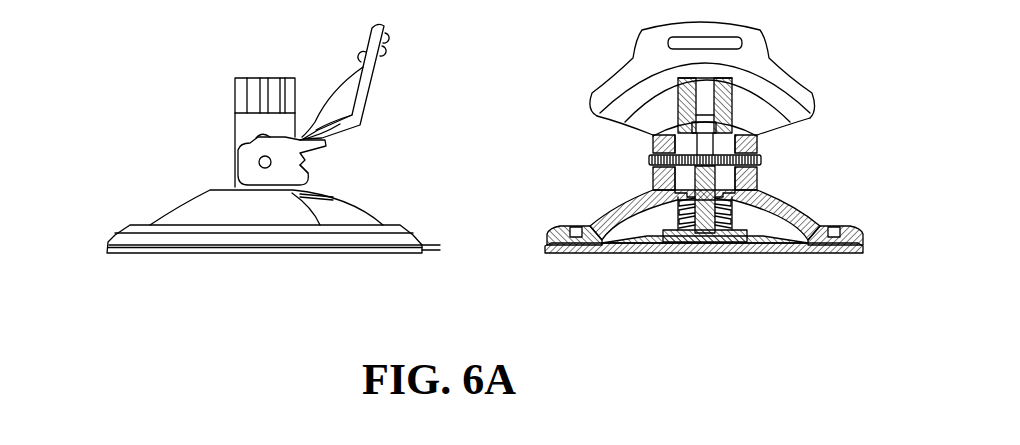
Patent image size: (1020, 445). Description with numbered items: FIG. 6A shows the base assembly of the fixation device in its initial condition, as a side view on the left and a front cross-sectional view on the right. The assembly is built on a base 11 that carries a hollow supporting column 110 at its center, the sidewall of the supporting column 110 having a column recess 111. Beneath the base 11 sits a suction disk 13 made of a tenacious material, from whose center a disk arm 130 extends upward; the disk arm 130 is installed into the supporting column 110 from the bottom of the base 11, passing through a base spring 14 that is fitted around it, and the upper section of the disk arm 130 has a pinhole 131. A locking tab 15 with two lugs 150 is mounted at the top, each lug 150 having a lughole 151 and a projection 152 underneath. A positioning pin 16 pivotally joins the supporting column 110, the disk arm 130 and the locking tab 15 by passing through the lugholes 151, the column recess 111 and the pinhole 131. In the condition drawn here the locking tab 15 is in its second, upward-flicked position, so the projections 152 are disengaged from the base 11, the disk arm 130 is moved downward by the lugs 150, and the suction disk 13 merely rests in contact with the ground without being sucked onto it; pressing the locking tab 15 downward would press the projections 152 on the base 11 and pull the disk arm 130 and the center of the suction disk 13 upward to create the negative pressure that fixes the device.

The base 11 is at (190, 210).
The suction disk 13 is at (110, 250).
The base spring 14 is at (686, 240).
The locking tab 15 is at (362, 93).
The positioning pin 16 is at (259, 162).
The supporting column 110 is at (273, 120).
The column recess 111 is at (260, 134).
The disk arm 130 is at (716, 186).
The pinhole 131 is at (725, 150).
The lugs 150 is at (258, 150).
The lughole 151 is at (325, 147).
The projection 152 is at (310, 175).